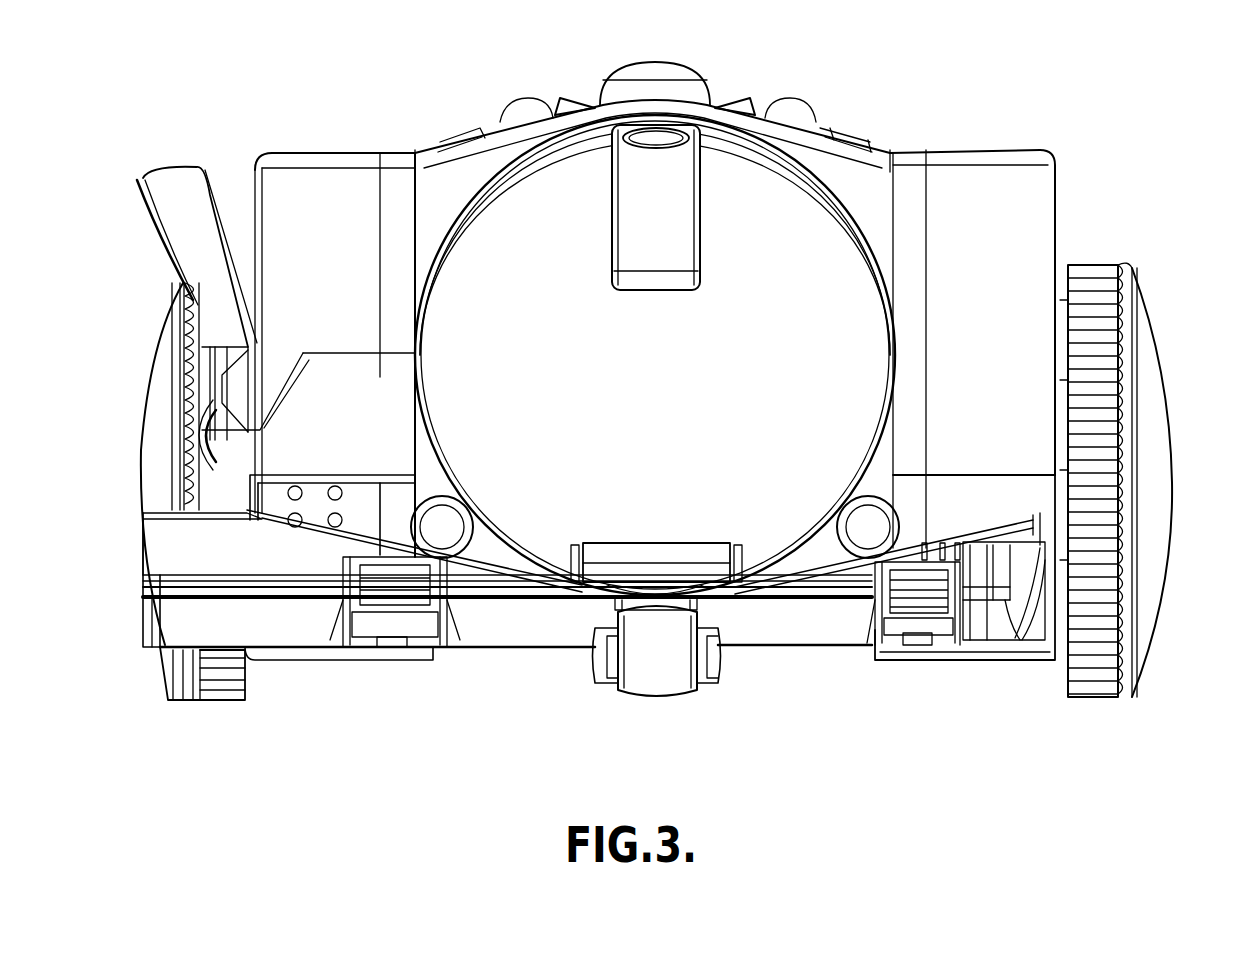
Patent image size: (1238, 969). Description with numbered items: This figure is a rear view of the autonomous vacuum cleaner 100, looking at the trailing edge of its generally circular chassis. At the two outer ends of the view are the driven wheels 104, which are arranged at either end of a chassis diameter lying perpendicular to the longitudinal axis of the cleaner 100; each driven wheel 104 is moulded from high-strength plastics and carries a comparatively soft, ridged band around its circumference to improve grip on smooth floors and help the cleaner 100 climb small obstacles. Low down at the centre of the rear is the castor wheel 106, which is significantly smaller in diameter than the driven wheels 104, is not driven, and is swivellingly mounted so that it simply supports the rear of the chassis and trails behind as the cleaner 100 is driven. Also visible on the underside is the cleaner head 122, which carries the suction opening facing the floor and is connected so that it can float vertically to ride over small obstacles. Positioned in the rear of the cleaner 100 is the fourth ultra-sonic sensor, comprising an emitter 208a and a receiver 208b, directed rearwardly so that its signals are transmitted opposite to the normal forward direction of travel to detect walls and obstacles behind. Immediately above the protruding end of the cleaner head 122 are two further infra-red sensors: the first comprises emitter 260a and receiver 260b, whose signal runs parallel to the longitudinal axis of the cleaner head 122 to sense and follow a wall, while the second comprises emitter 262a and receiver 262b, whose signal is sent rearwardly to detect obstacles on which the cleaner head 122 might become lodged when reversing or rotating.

The vacuum cleaner 100 is at (995, 118).
The driven wheel 104 is at (155, 432).
The cleaner head 122 is at (157, 553).
The emitter 260a is at (296, 486).
The emitter 262a is at (337, 486).
The receiver 260b is at (294, 528).
The receiver 262b is at (333, 528).
The emitter 208a is at (443, 530).
The receiver 208b is at (864, 532).
The castor wheel 106 is at (655, 660).